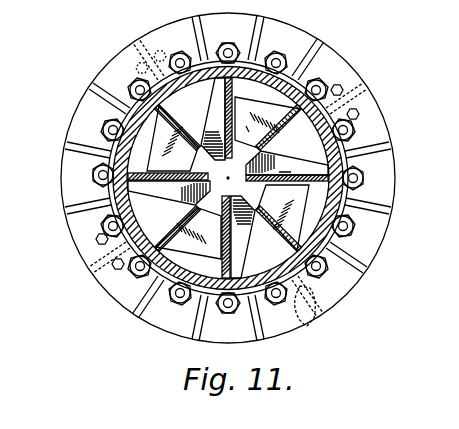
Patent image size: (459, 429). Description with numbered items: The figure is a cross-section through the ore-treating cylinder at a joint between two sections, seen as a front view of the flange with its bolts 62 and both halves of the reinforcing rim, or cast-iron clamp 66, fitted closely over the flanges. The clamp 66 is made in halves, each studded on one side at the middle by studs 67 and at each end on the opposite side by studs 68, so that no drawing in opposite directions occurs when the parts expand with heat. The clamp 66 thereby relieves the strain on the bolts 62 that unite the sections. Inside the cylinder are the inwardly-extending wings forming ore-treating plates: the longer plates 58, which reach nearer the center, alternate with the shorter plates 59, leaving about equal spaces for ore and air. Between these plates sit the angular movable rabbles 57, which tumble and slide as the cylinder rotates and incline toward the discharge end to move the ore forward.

The movable rabbles 57 is at (316, 160).
The longer wings or treating-plates 58 is at (233, 95).
The shorter wings or treating-plates 59 is at (281, 137).
The bolts 62 is at (97, 126).
The cast-iron clamp 66 is at (377, 243).
The studs 67 is at (357, 114).
The studs 68 is at (307, 327).